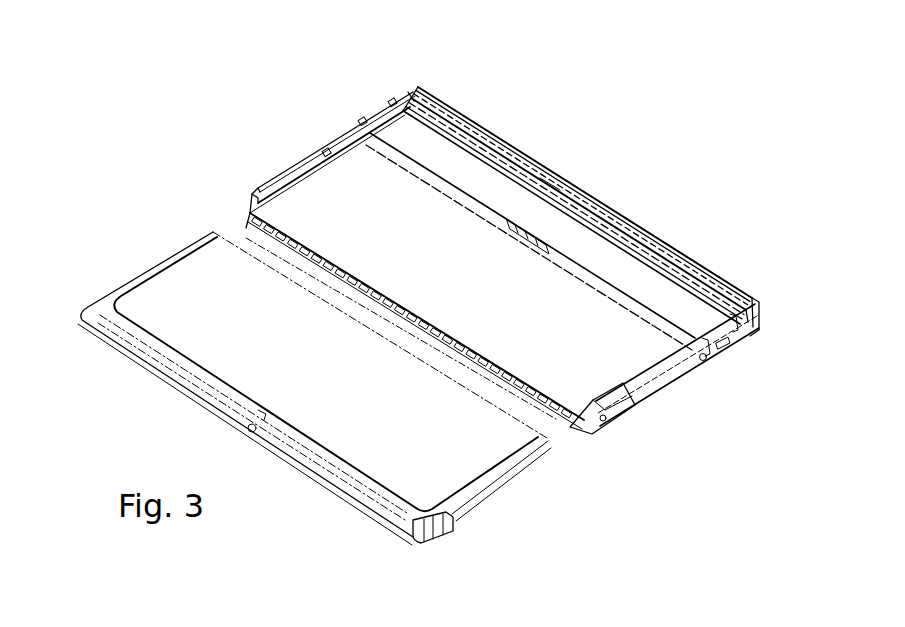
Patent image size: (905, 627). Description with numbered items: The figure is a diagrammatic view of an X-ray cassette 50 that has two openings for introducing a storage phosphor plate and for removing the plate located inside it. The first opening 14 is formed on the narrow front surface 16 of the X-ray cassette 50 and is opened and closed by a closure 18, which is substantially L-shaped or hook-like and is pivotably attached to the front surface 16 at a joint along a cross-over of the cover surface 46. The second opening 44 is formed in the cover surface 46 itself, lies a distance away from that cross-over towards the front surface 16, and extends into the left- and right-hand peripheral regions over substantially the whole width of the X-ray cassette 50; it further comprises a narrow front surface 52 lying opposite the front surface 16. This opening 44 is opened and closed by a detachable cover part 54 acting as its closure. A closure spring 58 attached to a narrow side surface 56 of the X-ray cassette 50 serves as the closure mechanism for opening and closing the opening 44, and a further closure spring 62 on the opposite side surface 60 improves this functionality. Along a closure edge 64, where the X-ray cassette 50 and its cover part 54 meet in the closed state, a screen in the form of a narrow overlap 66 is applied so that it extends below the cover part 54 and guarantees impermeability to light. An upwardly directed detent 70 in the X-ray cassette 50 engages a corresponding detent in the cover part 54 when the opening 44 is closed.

The opening 14 is at (651, 216).
The front surface 16 is at (489, 117).
The closure 18 is at (748, 294).
The opening 44 is at (572, 400).
The cover surface 46 is at (673, 254).
The X-ray cassette 50 is at (350, 136).
The front surface 52 is at (582, 170).
The cover part 54 is at (142, 303).
The side surface 56 is at (668, 375).
The closure spring 58 is at (618, 410).
The side surface 60 is at (297, 160).
The closure spring 62 is at (253, 178).
The closure edge 64 is at (590, 278).
The overlap 66 is at (460, 194).
The detent 70 is at (521, 238).